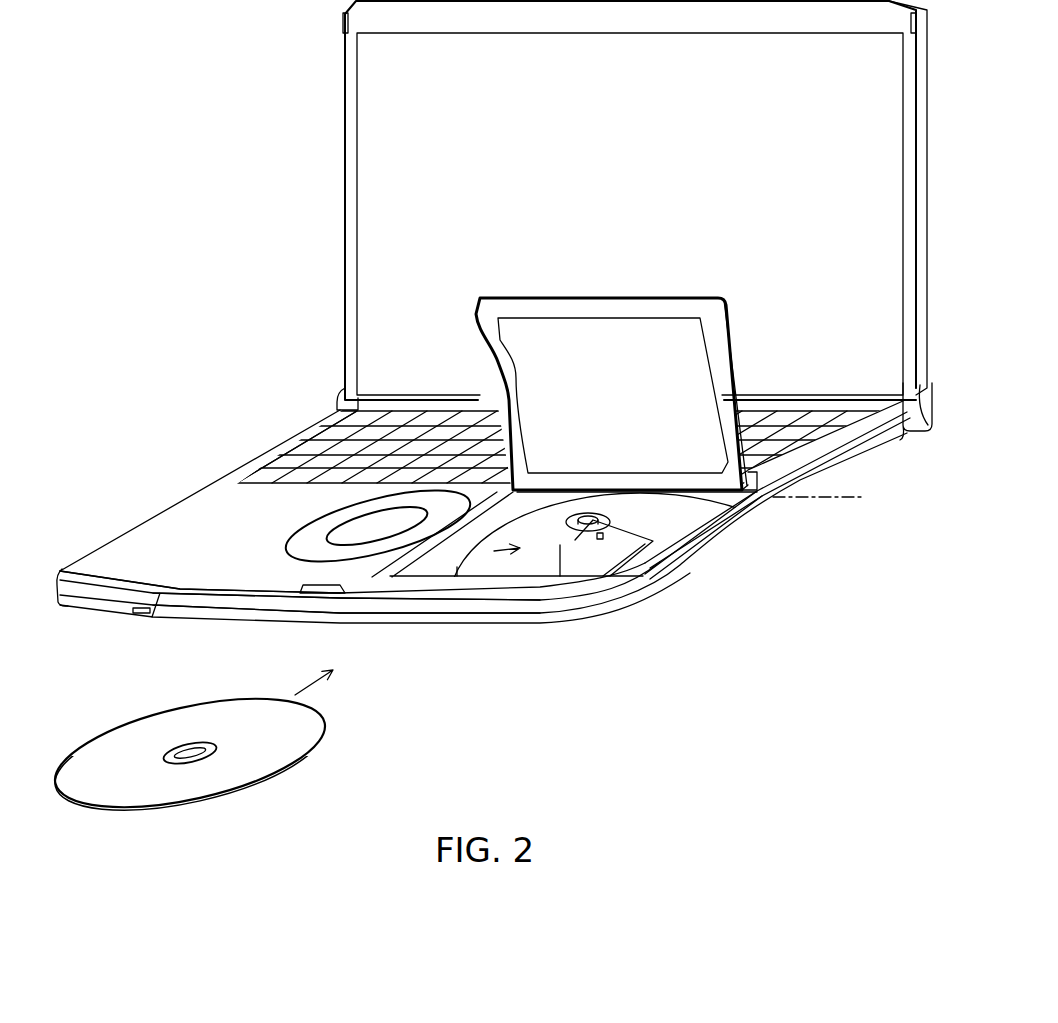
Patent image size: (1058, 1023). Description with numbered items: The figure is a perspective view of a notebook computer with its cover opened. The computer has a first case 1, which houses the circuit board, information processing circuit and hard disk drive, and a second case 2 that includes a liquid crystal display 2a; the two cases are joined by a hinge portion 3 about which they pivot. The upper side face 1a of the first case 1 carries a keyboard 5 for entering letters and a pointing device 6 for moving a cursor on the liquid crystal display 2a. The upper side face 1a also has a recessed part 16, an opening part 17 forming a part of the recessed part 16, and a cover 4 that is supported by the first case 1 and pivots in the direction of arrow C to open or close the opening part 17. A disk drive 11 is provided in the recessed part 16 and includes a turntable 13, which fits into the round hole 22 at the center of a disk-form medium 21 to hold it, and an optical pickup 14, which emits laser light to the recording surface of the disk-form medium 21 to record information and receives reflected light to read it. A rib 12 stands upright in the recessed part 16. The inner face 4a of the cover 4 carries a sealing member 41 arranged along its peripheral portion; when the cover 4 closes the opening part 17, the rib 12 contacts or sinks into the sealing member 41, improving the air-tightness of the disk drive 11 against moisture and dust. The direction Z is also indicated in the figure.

The first case 1 is at (760, 524).
The upper side face 1a is at (169, 553).
The second case 2 is at (346, 197).
The liquid crystal display 2a is at (383, 132).
The hinge portion 3 is at (929, 433).
The cover 4 is at (730, 313).
The inner face 4a is at (611, 335).
The sealing member 41 is at (725, 366).
The keyboard 5 is at (303, 453).
The pointing device 6 is at (356, 530).
The disk drive 11 is at (647, 530).
The rib 12 is at (417, 573).
The turntable 13 is at (573, 521).
The optical pickup 14 is at (593, 543).
The recessed part 16 is at (500, 557).
The opening part 17 is at (713, 522).
The disk-form medium 21 is at (168, 785).
The round hole 22 is at (213, 746).
The arrow C is at (853, 498).
The direction Z is at (308, 632).